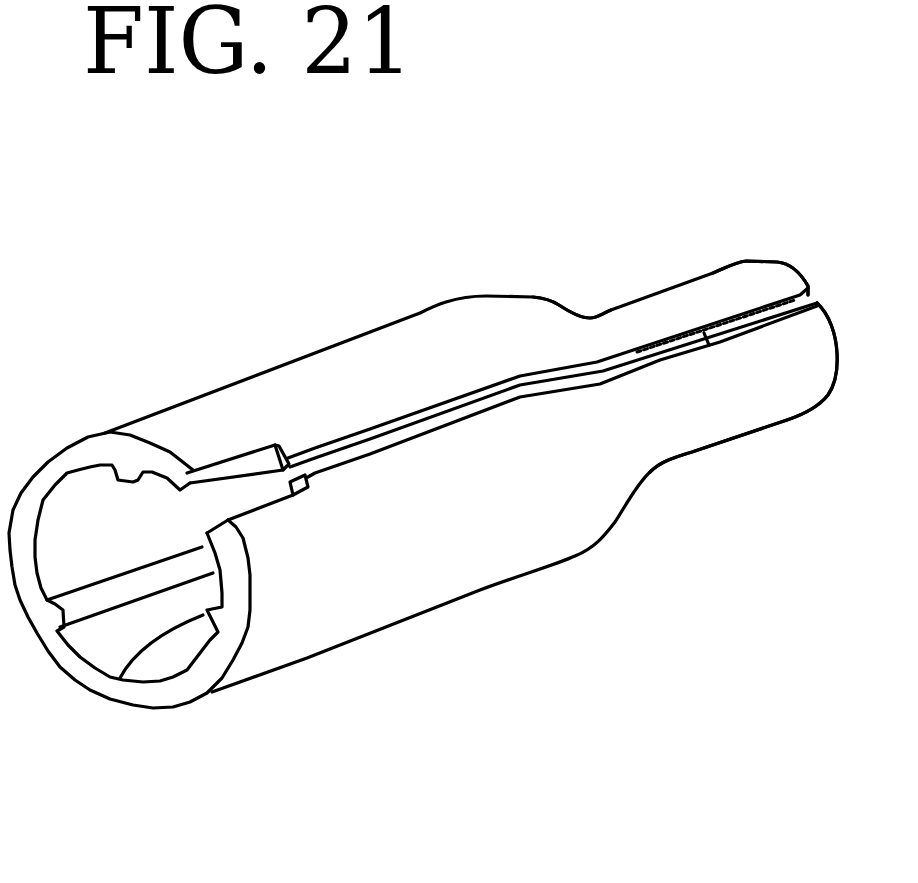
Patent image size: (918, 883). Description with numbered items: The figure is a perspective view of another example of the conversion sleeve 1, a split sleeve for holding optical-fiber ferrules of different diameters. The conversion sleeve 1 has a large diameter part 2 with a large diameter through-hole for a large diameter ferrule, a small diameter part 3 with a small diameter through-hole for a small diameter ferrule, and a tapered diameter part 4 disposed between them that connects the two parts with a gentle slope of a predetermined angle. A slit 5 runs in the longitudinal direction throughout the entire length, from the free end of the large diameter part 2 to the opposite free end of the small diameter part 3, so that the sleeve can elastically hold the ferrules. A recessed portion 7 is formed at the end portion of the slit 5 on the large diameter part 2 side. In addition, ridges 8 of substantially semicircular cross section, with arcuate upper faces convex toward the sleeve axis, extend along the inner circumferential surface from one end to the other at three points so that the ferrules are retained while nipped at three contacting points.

The split sleeve (conversion sleeve) 1 is at (410, 312).
The large diameter part 2 is at (217, 397).
The small diameter part 3 is at (710, 425).
The tapered diameter part 4 is at (555, 298).
The slit 5 is at (412, 435).
The recessed portion 7 is at (233, 500).
The ridges (elongated elevations) 8 is at (80, 607).